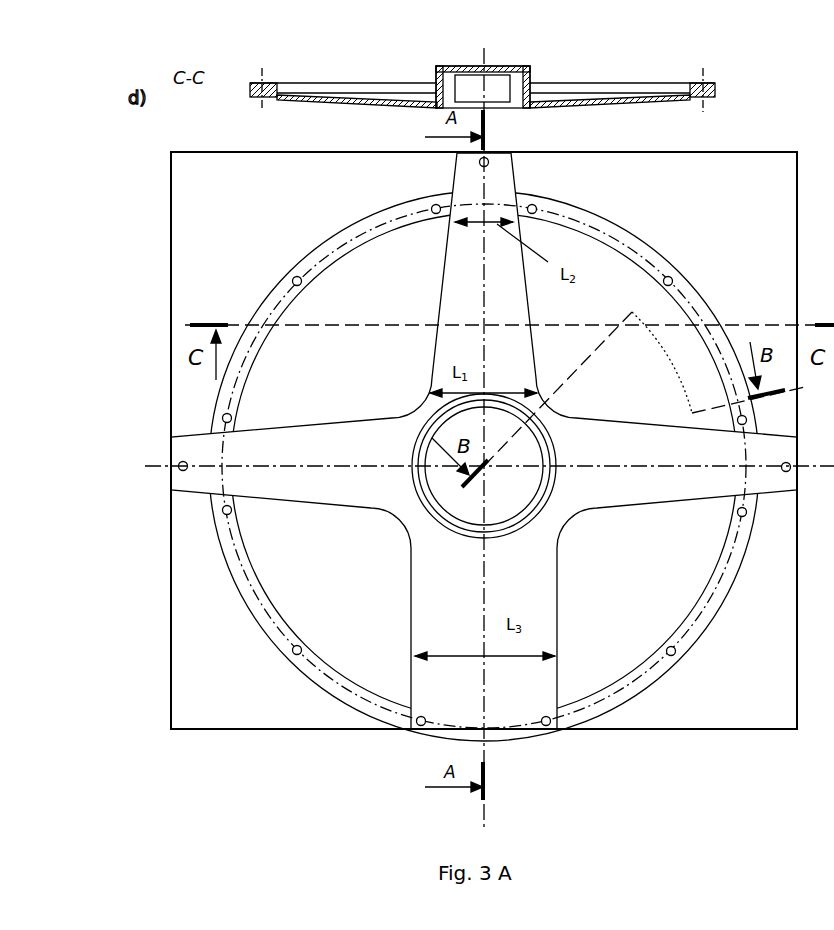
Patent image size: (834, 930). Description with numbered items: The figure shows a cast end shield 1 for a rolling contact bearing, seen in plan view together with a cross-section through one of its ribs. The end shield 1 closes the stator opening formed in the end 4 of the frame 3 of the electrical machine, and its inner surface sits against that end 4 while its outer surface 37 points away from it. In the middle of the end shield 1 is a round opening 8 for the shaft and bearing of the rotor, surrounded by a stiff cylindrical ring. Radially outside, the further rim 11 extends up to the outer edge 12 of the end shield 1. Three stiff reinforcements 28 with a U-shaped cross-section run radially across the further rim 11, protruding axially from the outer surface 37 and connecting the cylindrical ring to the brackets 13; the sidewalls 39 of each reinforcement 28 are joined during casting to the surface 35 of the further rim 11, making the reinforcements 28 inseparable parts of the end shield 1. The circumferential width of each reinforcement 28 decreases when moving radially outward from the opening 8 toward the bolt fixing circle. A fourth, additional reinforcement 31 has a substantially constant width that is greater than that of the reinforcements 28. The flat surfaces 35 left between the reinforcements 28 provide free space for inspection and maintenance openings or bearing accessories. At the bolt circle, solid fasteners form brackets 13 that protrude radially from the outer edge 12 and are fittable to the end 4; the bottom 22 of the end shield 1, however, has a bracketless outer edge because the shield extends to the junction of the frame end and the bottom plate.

In FIG. 3A, the end shield 1 is at (349, 620).
In FIG. 3A, the frame 3 is at (170, 310).
In FIG. 3A, the end 4 is at (742, 260).
In FIG. 3A, the opening 8 is at (511, 502).
In FIG. 3A, the further rim 11 is at (367, 305).
In FIG. 3A, the outer edge 12 is at (613, 226).
In FIG. 3A, the bracket 13 is at (468, 174).
In FIG. 3A, the bottom 22 is at (567, 653).
In FIG. 3d, the reinforcement 28 is at (527, 70).
In FIG. 3A, the reinforcement 28 is at (517, 317).
In FIG. 3A, the additional reinforcement 31 is at (449, 620).
In FIG. 3A, the surface 35 is at (357, 382).
In FIG. 3A, the outer surface 37 is at (302, 395).
In FIG. 3d, the sidewall 39 is at (443, 90).